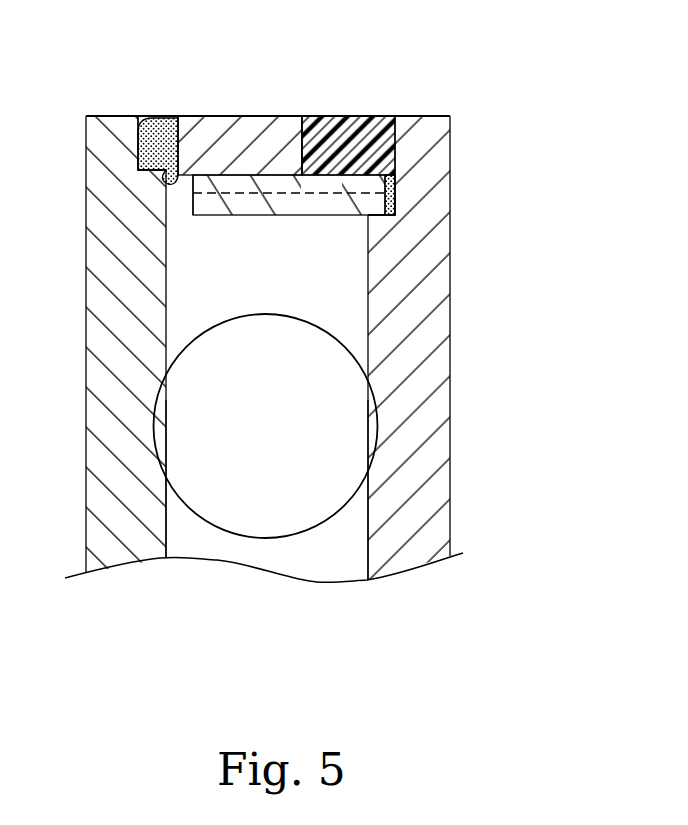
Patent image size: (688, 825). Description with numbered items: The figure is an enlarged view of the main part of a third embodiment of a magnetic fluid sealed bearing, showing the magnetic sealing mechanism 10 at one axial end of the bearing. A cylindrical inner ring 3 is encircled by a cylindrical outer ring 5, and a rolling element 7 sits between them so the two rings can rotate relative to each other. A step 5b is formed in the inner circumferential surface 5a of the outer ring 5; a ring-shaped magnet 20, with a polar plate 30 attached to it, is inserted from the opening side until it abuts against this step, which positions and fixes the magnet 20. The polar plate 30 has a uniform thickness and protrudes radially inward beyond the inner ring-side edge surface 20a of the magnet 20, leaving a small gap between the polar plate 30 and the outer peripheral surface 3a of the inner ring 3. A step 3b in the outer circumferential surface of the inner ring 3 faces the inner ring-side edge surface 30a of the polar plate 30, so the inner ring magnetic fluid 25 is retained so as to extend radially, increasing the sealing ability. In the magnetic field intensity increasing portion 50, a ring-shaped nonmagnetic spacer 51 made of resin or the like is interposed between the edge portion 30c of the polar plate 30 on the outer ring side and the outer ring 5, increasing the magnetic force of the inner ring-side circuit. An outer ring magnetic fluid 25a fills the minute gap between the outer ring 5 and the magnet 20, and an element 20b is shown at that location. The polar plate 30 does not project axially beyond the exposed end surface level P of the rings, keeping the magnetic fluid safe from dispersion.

The exposed end surface level P is at (92, 116).
The magnetic sealing mechanism 10 is at (403, 68).
The inner ring 3 is at (85, 342).
The outer peripheral surface of the inner ring 3a is at (166, 515).
The step 3b is at (140, 155).
The outer ring 5 is at (443, 332).
The inner circumferential surface of the outer ring 5a is at (368, 540).
The step 5b is at (398, 207).
The rolling element 7 is at (362, 442).
The magnet 20 is at (217, 213).
The inner ring-side edge surface of the magnet 20a is at (193, 200).
The spacer of magnet 20b is at (397, 191).
The inner ring magnetic fluid 25 is at (153, 118).
The outer ring magnetic fluid 25a is at (397, 182).
The polar plate 30 is at (247, 120).
The inner ring-side edge surface of the polar plate 30a is at (163, 125).
The edge portion of the polar plate on the outer ring side 30c is at (320, 128).
The magnetic field intensity increasing portion 50 is at (347, 107).
The spacer 51 is at (368, 116).